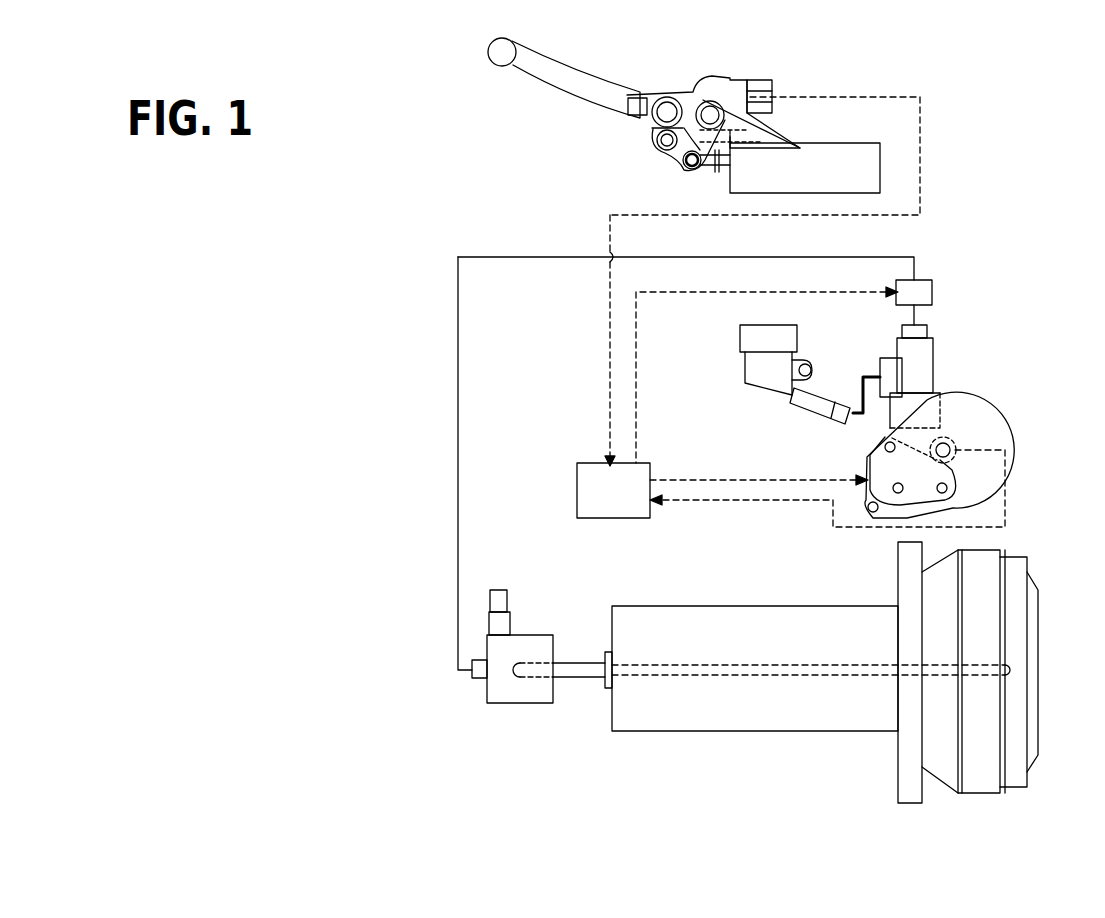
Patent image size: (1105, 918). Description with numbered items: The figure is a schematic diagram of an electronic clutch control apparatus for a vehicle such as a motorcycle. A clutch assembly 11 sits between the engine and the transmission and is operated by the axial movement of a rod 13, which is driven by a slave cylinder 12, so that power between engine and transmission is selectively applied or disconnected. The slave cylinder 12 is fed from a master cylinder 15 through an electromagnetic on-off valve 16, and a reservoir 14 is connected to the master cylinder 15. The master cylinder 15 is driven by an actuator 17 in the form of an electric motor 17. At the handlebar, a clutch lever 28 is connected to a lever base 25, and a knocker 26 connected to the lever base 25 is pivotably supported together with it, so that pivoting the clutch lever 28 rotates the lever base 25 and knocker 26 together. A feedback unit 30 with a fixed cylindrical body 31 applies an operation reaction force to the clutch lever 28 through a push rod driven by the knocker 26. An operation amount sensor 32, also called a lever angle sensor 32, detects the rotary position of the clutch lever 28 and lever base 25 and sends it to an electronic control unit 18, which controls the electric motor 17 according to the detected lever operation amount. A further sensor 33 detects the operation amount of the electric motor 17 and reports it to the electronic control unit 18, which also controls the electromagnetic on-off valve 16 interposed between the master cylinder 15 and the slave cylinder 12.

The clutch assembly 11 is at (988, 800).
The slave cylinder 12 is at (522, 688).
The rod 13 is at (578, 670).
The reservoir 14 is at (762, 383).
The master cylinder 15 is at (912, 350).
The electromagnetic on-off valve 16 is at (920, 292).
The actuator (electric motor) 17 is at (973, 445).
The electronic control unit 18 is at (596, 507).
The lever base 25 is at (664, 92).
The knocker 26 is at (676, 155).
The clutch lever 28 is at (556, 84).
The feedback unit 30 is at (808, 128).
The fixed cylindrical body 31 is at (845, 157).
The operation amount sensor (lever angle sensor) 32 is at (773, 87).
The sensor 33 is at (955, 440).